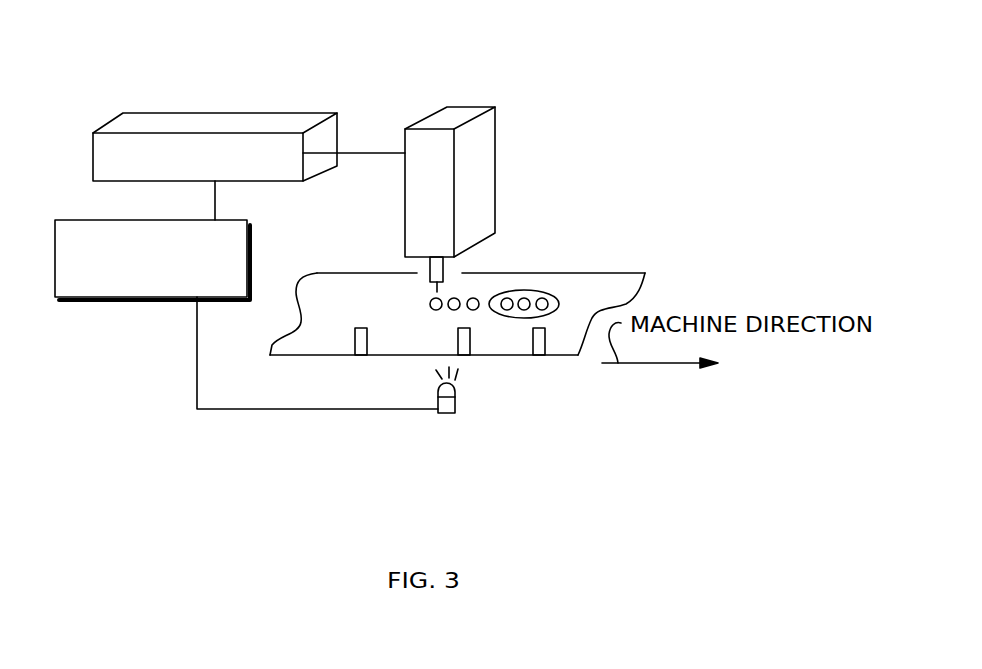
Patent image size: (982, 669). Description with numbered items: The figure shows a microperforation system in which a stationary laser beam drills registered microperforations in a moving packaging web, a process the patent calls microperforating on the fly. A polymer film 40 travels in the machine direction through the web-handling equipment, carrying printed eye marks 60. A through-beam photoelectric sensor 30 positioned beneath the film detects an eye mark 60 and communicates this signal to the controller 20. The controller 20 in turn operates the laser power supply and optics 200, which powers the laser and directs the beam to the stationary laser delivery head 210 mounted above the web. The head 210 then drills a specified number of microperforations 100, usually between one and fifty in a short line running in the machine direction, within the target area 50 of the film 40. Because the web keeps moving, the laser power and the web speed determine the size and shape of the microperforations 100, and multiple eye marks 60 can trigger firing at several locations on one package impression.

The laser power supply and optics 200 is at (280, 152).
The stationary laser delivery head 210 is at (458, 117).
The controller 20 is at (163, 287).
The polymer film 40 is at (553, 273).
The target area 50 is at (508, 292).
The microperforation 100 is at (545, 309).
The eye mark 60 is at (377, 375).
The photoelectric sensor 30 is at (447, 413).